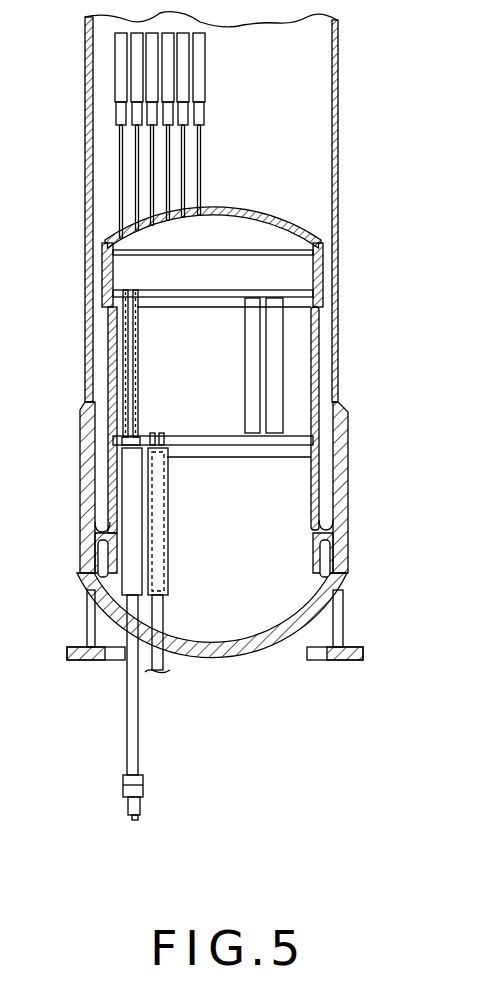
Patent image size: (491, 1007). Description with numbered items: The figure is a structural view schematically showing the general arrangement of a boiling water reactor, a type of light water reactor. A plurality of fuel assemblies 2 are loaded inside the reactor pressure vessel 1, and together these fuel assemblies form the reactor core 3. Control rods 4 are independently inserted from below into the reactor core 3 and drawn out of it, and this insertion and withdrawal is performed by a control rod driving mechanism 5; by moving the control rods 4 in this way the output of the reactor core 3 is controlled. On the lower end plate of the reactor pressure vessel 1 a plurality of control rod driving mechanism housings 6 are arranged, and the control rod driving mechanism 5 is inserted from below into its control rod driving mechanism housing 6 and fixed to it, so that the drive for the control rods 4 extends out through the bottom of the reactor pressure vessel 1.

The reactor pressure vessel 1 is at (347, 488).
The fuel assemblies 2 is at (257, 377).
The reactor core 3 is at (295, 343).
The control rods 4 is at (125, 377).
The control rod driving mechanism 5 is at (152, 804).
The control rod driving mechanism housings 6 is at (140, 715).